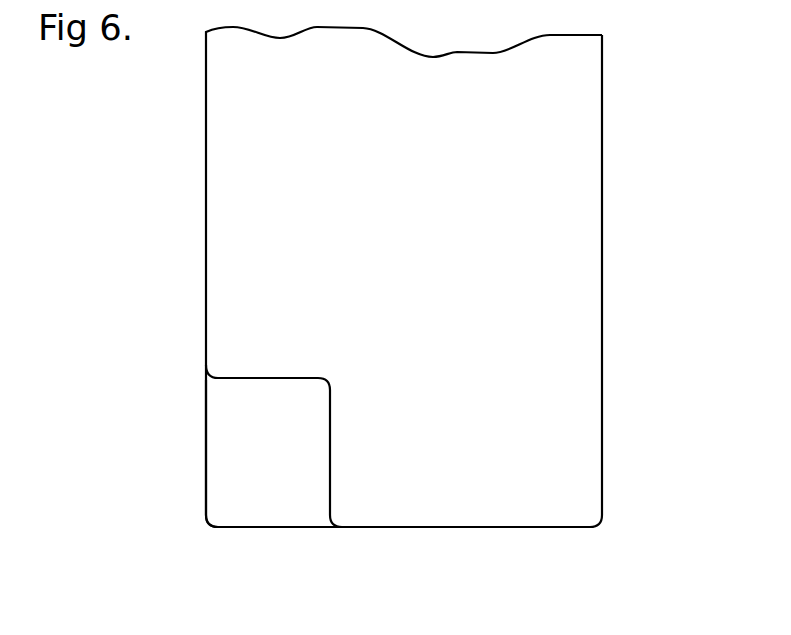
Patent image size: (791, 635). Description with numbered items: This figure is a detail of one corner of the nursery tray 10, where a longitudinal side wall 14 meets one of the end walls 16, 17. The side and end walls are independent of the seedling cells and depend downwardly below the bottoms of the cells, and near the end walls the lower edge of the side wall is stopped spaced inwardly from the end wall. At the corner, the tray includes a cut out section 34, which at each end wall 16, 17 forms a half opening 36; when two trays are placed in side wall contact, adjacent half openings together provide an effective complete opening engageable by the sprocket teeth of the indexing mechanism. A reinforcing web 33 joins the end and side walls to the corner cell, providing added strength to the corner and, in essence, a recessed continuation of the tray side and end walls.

The nursery tray 10 is at (437, 307).
The longitudinal side wall 14 is at (640, 275).
The end wall 16 is at (410, 549).
The end wall 17 is at (478, 527).
The web 33 is at (252, 378).
The cut out section 34 is at (267, 497).
The half opening 36 is at (305, 527).